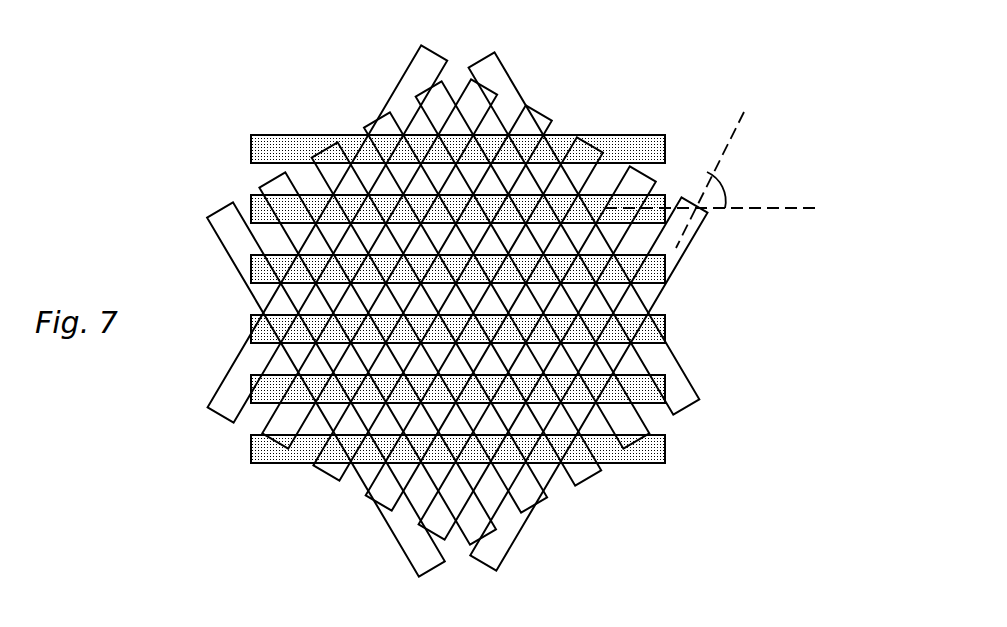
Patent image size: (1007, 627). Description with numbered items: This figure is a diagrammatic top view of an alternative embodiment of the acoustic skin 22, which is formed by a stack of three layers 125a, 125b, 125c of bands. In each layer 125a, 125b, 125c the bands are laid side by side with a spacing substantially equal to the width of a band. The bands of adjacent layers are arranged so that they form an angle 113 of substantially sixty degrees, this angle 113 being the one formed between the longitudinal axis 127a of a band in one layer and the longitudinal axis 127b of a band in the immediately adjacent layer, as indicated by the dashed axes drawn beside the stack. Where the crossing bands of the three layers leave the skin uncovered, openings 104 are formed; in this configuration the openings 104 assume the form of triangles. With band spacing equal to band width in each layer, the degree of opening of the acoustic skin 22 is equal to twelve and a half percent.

The acoustic skin 22 is at (605, 80).
The layer 125a is at (645, 152).
The layer 125b is at (687, 233).
The layer 125c is at (690, 386).
The openings 104 is at (592, 296).
The longitudinal axis 127a is at (760, 210).
The longitudinal axis 127b is at (740, 135).
The angle 113 is at (721, 186).